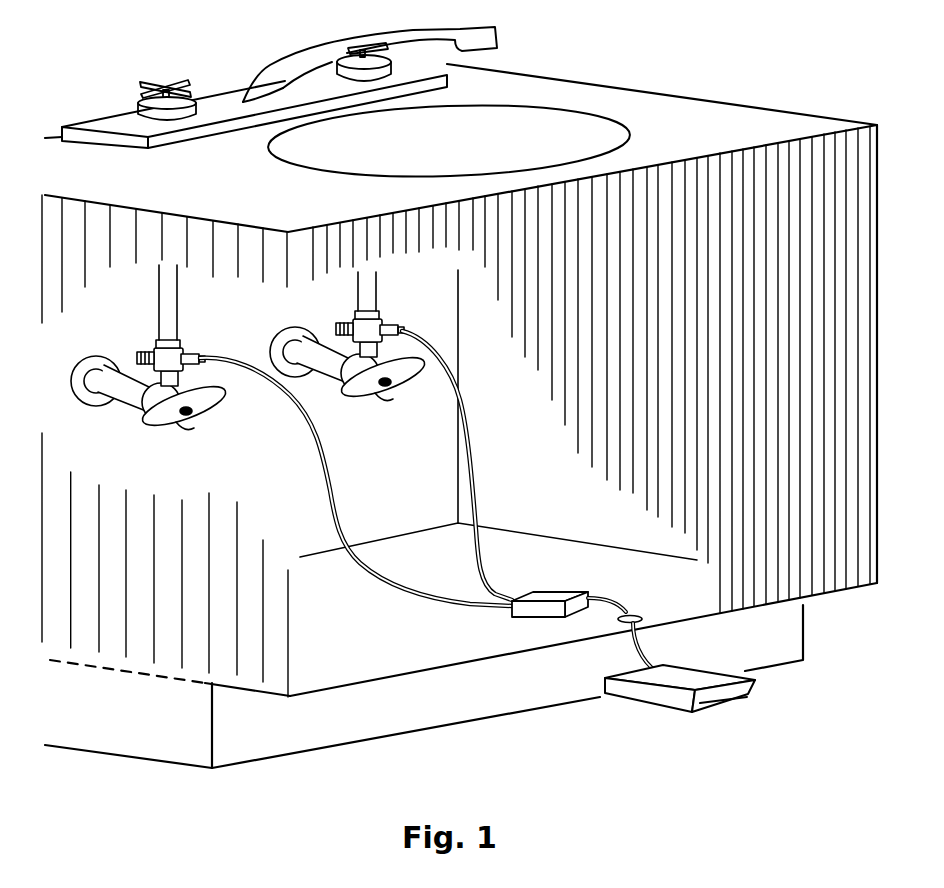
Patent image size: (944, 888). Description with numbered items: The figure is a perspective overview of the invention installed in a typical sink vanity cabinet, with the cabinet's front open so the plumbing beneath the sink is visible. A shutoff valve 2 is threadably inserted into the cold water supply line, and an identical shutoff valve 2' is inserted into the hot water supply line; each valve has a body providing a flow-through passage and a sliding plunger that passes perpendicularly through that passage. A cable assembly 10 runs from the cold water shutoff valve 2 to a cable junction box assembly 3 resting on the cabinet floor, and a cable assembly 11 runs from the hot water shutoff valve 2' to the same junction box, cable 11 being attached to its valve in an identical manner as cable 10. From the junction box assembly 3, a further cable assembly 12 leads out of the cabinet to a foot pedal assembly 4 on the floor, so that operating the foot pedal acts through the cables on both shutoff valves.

The shutoff valve assembly 2 is at (358, 336).
The shutoff valve assembly 2' is at (163, 349).
The cable junction box assembly 3 is at (489, 623).
The foot pedal assembly 4 is at (774, 707).
The cable assembly 10 is at (483, 422).
The cable assembly 11 is at (349, 457).
The cable assembly 12 is at (638, 598).